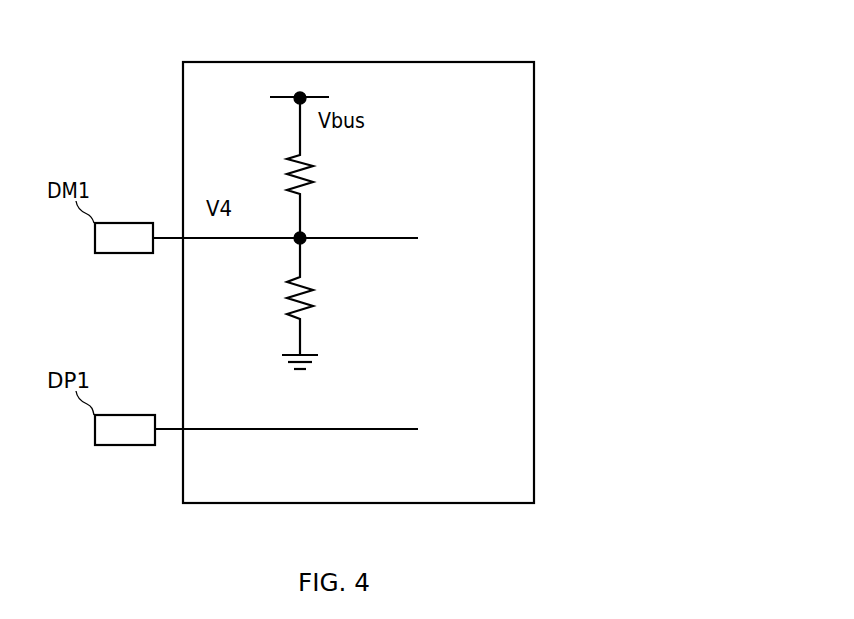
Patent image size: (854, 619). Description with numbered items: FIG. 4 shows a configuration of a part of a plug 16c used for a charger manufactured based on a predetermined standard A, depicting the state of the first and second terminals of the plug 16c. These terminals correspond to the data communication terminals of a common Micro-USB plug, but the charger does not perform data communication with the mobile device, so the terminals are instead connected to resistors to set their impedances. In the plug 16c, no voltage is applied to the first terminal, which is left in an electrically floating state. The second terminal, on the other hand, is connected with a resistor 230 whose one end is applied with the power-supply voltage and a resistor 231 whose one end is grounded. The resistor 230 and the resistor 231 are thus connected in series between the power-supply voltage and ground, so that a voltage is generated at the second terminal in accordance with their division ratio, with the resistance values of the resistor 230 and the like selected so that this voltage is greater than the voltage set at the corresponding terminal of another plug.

The plug 16c is at (478, 62).
The resistor 230 is at (291, 155).
The resistor 231 is at (312, 301).